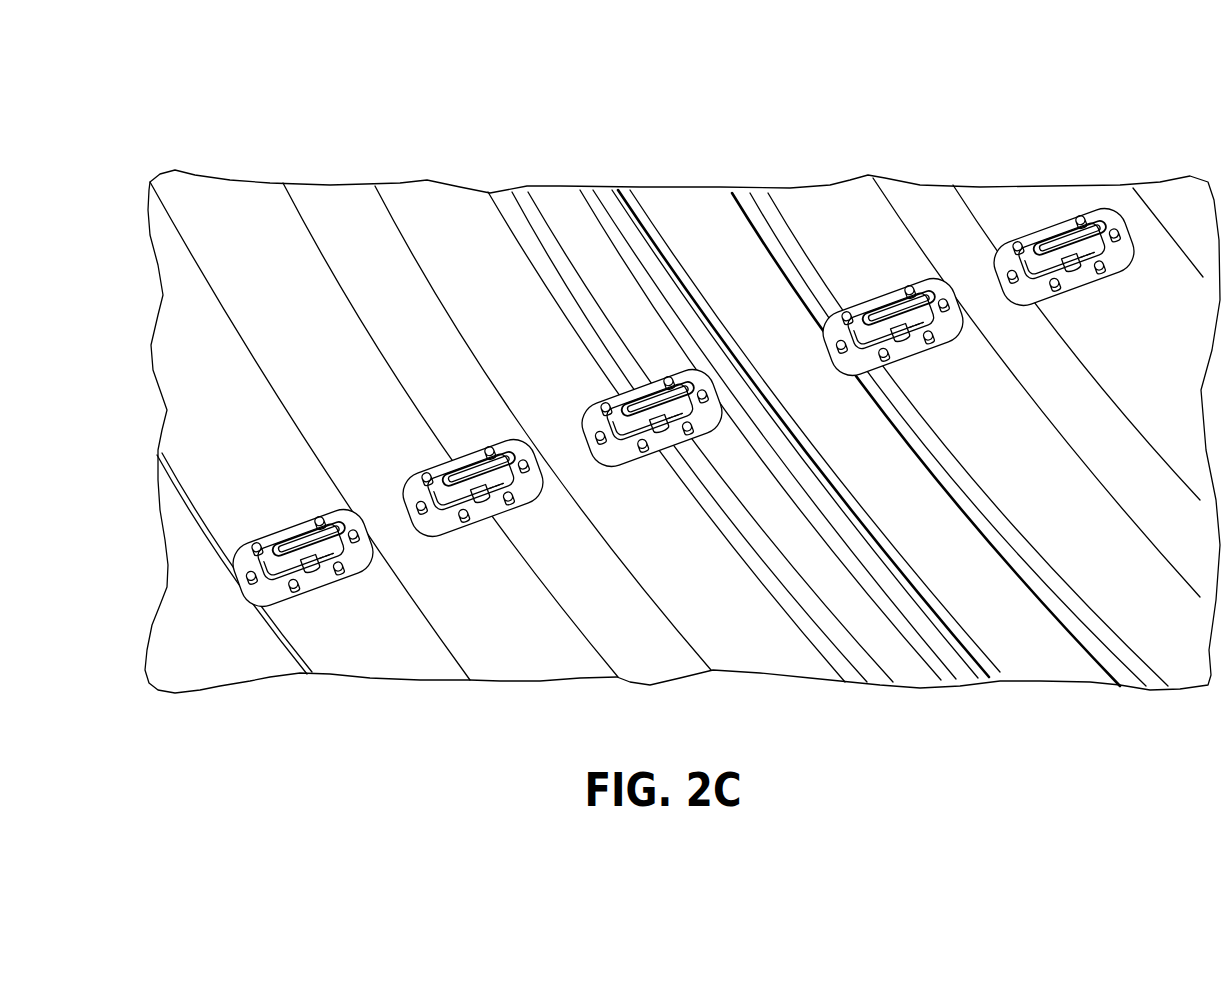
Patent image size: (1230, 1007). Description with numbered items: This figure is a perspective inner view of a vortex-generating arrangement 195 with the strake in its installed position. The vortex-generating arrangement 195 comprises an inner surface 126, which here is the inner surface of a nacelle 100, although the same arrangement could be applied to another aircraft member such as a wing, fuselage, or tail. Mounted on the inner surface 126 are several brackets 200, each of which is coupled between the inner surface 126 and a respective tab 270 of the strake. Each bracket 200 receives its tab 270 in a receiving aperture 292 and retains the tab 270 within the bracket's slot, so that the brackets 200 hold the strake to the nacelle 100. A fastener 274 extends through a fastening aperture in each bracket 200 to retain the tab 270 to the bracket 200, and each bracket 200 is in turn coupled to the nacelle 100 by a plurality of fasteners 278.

The vortex-generating arrangement 195 is at (596, 135).
The nacelle 100 is at (448, 204).
The inner surface 126 is at (499, 329).
The bracket 200 is at (260, 531).
The tab 270 is at (302, 522).
The fastener 274 is at (316, 574).
The fastener 278 is at (350, 530).
The receiving aperture 292 is at (312, 556).